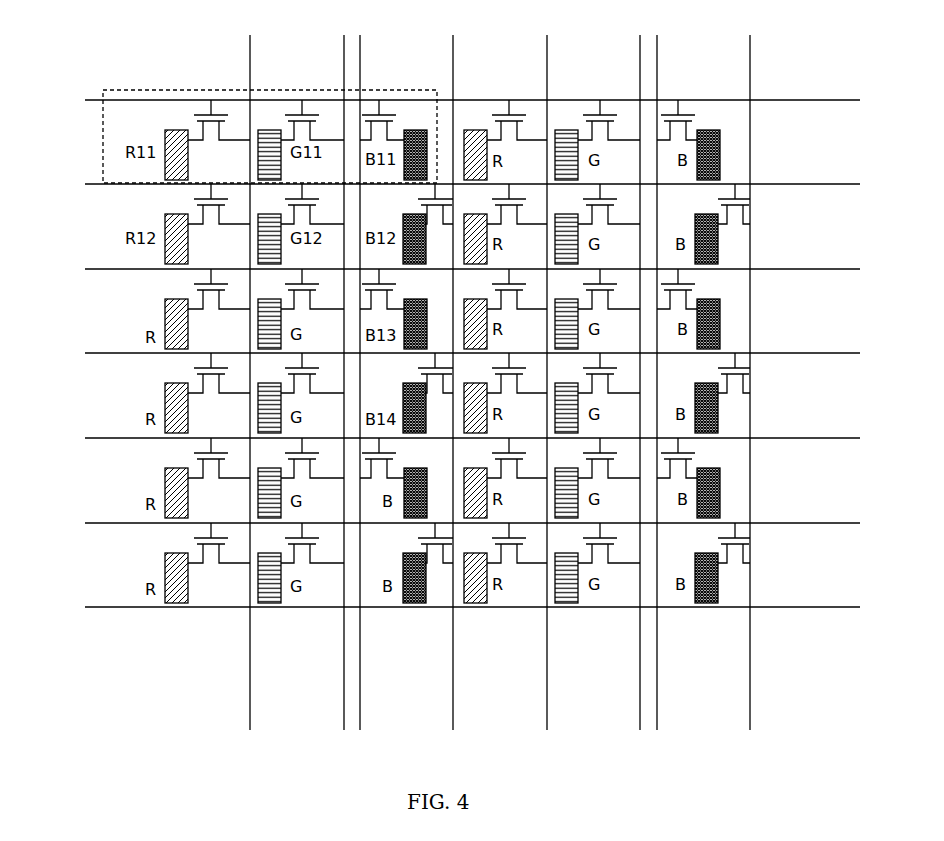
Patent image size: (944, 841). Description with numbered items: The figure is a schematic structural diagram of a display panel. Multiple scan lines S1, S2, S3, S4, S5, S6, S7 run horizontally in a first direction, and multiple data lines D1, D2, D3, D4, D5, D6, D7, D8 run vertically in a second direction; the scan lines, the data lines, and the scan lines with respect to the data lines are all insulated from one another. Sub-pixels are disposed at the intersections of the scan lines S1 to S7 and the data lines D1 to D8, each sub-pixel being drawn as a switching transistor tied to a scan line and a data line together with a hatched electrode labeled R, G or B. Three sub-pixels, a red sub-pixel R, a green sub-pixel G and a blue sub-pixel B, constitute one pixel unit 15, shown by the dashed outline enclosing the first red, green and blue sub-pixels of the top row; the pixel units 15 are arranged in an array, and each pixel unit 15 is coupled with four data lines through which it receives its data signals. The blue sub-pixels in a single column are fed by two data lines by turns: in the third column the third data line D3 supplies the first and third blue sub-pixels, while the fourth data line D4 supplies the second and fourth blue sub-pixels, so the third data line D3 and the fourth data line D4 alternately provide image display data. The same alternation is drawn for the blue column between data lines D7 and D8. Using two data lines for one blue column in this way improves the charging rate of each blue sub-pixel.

The pixel unit 15 is at (145, 90).
The scan line S1 is at (449, 101).
The scan line S2 is at (449, 185).
The scan line S3 is at (449, 270).
The scan line S4 is at (449, 354).
The scan line S5 is at (449, 439).
The scan line S6 is at (449, 524).
The scan line S7 is at (449, 608).
The data line D1 is at (247, 365).
The data line D2 is at (333, 365).
The third data line D3 is at (370, 365).
The fourth data line D4 is at (450, 365).
The data line D5 is at (545, 365).
The data line D6 is at (631, 365).
The data line D7 is at (661, 365).
The data line D8 is at (750, 365).